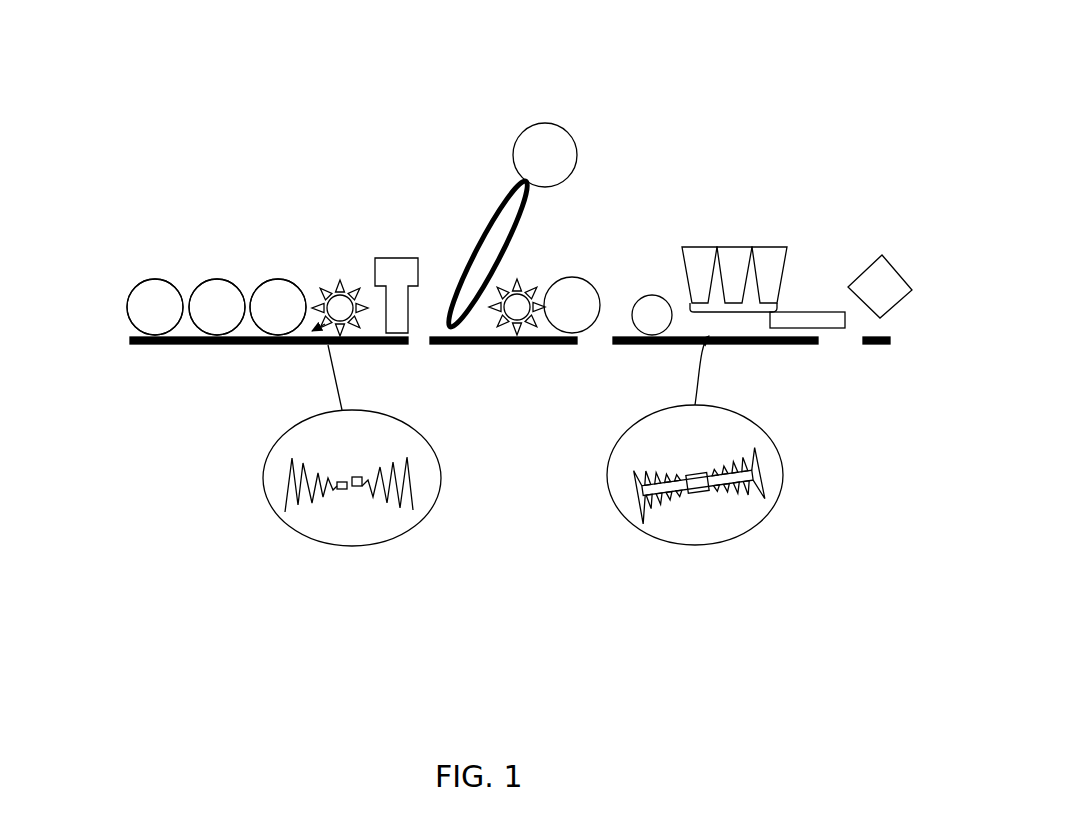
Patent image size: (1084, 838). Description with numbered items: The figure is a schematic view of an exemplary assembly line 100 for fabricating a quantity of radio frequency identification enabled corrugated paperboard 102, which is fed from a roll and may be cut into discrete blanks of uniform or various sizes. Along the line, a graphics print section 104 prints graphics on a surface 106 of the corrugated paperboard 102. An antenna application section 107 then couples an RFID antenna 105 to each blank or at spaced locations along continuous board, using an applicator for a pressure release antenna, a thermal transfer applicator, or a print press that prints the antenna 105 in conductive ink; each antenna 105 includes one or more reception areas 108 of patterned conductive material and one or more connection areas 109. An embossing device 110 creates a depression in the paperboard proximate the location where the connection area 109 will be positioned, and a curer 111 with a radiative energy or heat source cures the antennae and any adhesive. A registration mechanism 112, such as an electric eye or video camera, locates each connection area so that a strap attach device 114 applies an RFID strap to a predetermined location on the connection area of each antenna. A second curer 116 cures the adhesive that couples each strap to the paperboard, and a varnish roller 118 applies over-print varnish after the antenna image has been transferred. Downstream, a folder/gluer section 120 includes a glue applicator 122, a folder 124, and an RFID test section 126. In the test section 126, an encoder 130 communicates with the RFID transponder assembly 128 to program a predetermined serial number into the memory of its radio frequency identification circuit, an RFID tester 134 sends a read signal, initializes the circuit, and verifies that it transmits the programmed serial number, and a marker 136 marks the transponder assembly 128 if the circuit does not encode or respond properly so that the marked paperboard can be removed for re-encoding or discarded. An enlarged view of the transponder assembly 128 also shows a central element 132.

The assembly line 100 is at (647, 71).
The corrugated paperboard 102 is at (507, 344).
The graphics print section 104 is at (195, 249).
The RFID antenna 105 is at (350, 514).
The surface 106 is at (134, 336).
The antenna application section 107 is at (280, 266).
The reception area 108 is at (365, 465).
The connection area 109 is at (357, 477).
The embossing device 110 is at (221, 267).
The curer 111 is at (351, 271).
The registration mechanism 112 is at (397, 272).
The strap attach device 114 is at (482, 174).
The second curer 116 is at (542, 269).
The varnish roller 118 is at (592, 280).
The folder/gluer section 120 is at (761, 265).
The glue applicator 122 is at (643, 333).
The folder 124 is at (812, 330).
The RFID test section 126 is at (733, 312).
The RFID transponder assembly 128 is at (698, 454).
The encoder 130 is at (700, 246).
The central element 132 is at (697, 473).
The RFID tester 134 is at (748, 247).
The marker 136 is at (787, 272).